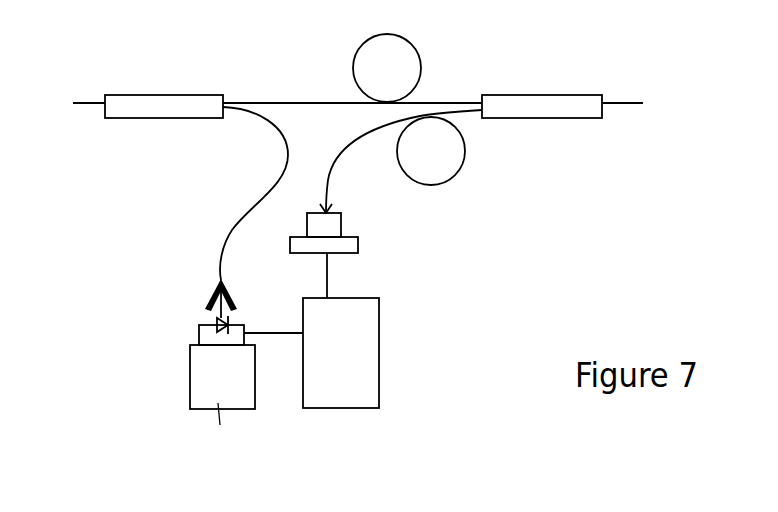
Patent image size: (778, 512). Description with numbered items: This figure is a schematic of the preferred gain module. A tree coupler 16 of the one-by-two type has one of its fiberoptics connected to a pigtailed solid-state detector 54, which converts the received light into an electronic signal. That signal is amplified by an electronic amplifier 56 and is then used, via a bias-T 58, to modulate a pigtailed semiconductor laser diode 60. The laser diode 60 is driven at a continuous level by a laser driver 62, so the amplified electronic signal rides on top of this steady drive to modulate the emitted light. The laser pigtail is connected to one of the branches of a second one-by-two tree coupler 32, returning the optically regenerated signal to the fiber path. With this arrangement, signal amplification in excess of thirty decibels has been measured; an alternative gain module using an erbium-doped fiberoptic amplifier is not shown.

The tree coupler 32 is at (148, 100).
The tree coupler 16 is at (542, 93).
The pigtailed solid-state detector 54 is at (342, 223).
The electronic amplifier 56 is at (372, 325).
The bias-T 58 is at (273, 317).
The semiconductor laser diode 60 is at (213, 312).
The laser driver 62 is at (208, 411).